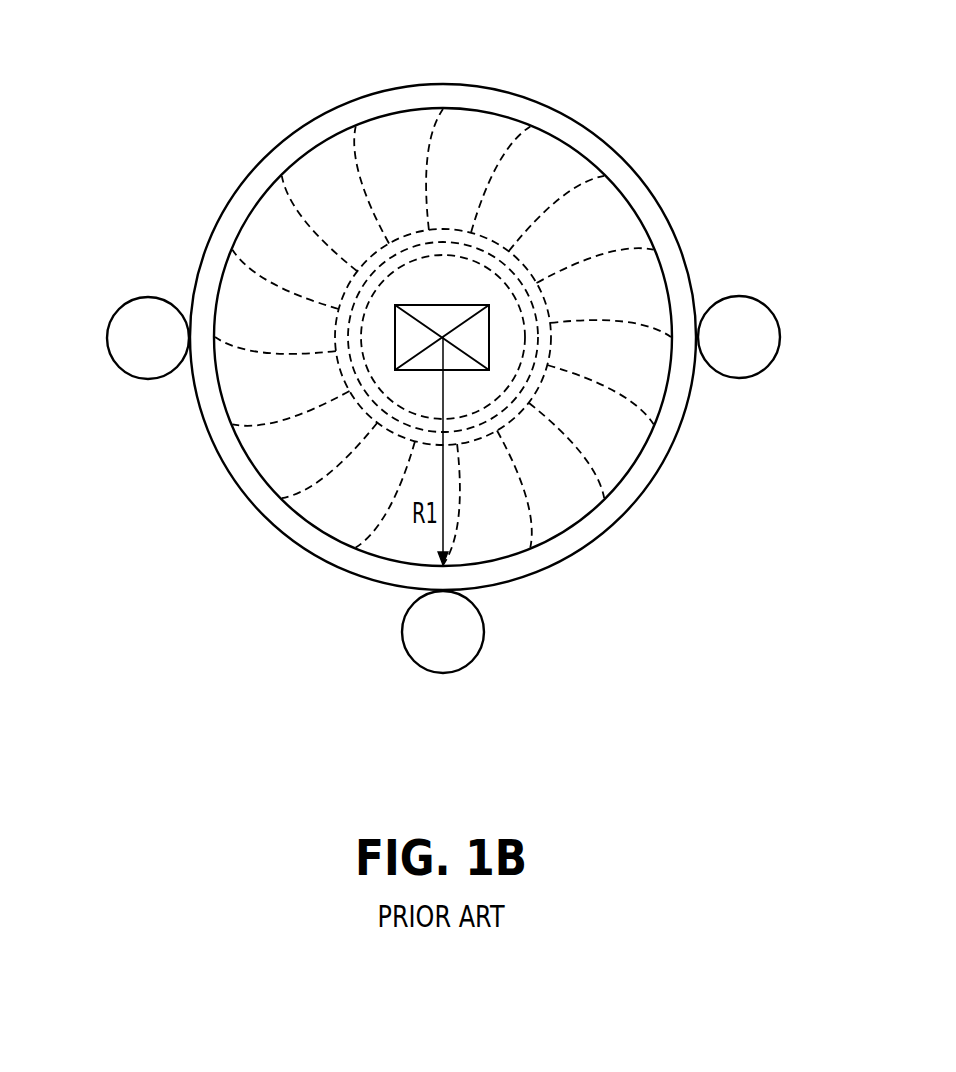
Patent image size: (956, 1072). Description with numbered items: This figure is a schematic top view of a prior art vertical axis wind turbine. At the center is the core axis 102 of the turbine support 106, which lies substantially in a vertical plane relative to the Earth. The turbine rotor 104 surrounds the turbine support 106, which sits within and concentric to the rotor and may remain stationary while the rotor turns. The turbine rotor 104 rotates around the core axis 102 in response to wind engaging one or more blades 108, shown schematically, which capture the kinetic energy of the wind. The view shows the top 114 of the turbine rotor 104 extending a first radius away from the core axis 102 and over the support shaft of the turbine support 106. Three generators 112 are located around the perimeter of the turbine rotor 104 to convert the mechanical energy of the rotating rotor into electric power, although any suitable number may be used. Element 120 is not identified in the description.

The core axis 102 is at (442, 349).
The turbine rotor 104 is at (512, 267).
The turbine support 106 is at (453, 306).
The blades 108 is at (437, 112).
The generator 112 is at (120, 308).
The top 114 is at (500, 490).
The outer wall of housing 120 is at (350, 122).